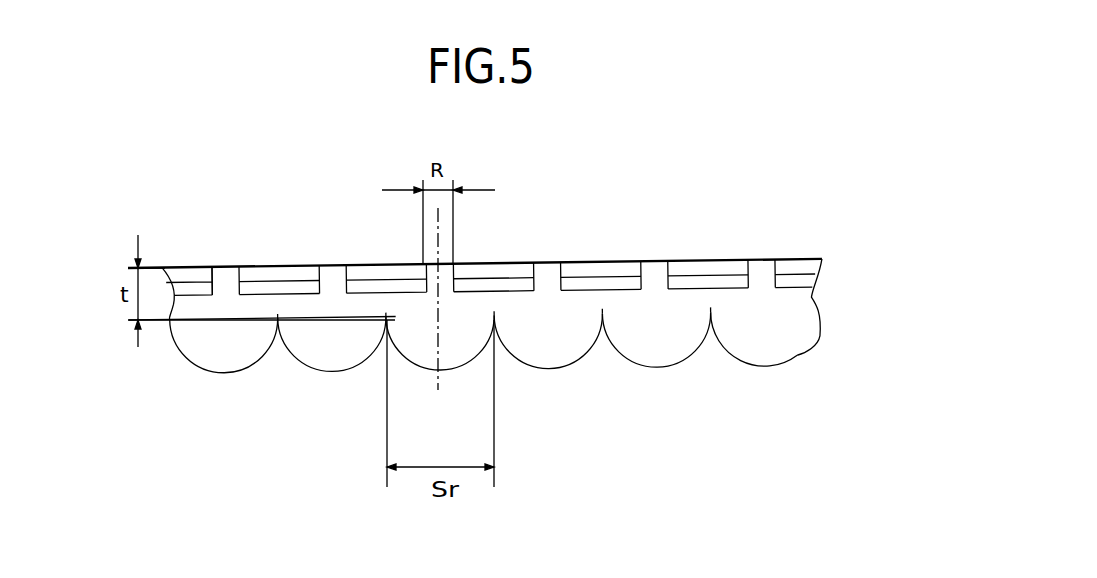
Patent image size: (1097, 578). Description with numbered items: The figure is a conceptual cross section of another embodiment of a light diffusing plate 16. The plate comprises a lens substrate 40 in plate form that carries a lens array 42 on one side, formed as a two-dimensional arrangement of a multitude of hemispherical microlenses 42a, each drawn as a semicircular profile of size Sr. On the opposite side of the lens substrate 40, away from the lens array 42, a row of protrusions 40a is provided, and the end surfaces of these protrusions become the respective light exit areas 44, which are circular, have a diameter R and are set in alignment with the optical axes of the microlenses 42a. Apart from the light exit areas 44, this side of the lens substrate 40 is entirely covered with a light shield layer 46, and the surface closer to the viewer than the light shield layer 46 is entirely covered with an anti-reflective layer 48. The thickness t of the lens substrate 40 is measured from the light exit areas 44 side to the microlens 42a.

The light diffusing plate 16 is at (170, 208).
The lens substrate 40 is at (812, 300).
The protrusions 40a is at (228, 267).
The lens array 42 is at (598, 368).
The microlens 42a is at (322, 356).
The light exit areas 44 is at (225, 257).
The light shield layer 46 is at (330, 268).
The anti-reflective layer 48 is at (503, 265).